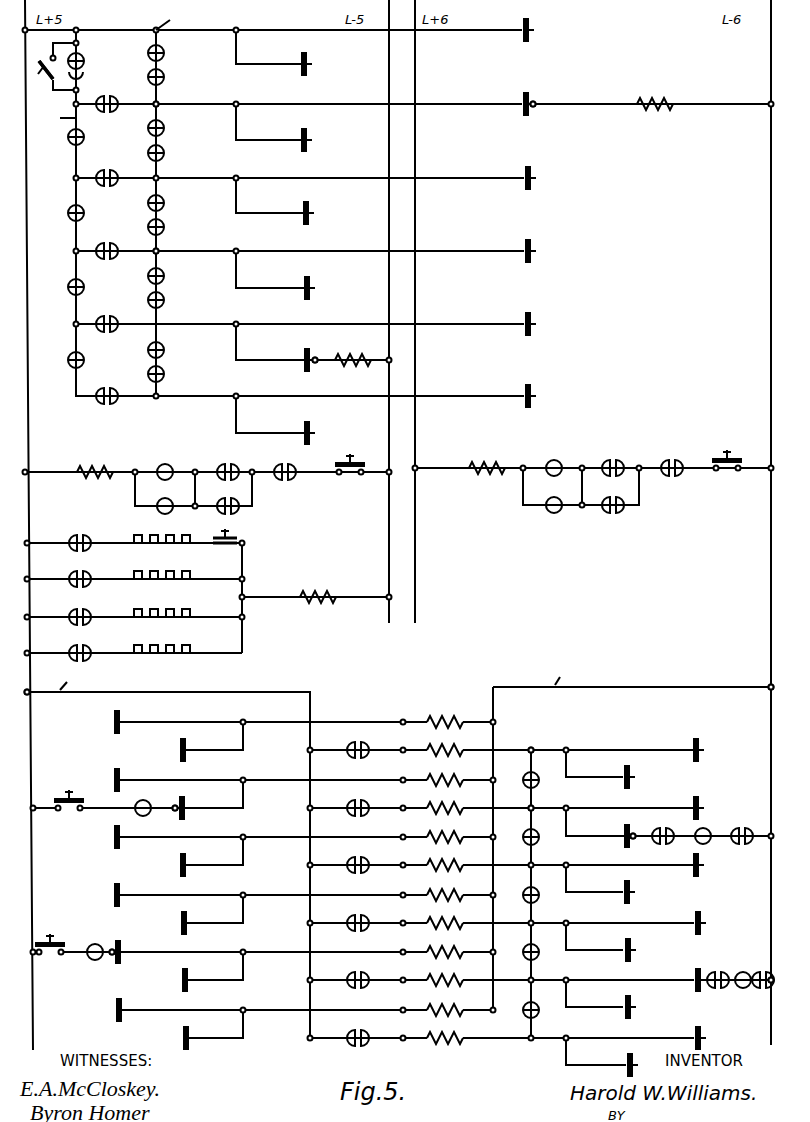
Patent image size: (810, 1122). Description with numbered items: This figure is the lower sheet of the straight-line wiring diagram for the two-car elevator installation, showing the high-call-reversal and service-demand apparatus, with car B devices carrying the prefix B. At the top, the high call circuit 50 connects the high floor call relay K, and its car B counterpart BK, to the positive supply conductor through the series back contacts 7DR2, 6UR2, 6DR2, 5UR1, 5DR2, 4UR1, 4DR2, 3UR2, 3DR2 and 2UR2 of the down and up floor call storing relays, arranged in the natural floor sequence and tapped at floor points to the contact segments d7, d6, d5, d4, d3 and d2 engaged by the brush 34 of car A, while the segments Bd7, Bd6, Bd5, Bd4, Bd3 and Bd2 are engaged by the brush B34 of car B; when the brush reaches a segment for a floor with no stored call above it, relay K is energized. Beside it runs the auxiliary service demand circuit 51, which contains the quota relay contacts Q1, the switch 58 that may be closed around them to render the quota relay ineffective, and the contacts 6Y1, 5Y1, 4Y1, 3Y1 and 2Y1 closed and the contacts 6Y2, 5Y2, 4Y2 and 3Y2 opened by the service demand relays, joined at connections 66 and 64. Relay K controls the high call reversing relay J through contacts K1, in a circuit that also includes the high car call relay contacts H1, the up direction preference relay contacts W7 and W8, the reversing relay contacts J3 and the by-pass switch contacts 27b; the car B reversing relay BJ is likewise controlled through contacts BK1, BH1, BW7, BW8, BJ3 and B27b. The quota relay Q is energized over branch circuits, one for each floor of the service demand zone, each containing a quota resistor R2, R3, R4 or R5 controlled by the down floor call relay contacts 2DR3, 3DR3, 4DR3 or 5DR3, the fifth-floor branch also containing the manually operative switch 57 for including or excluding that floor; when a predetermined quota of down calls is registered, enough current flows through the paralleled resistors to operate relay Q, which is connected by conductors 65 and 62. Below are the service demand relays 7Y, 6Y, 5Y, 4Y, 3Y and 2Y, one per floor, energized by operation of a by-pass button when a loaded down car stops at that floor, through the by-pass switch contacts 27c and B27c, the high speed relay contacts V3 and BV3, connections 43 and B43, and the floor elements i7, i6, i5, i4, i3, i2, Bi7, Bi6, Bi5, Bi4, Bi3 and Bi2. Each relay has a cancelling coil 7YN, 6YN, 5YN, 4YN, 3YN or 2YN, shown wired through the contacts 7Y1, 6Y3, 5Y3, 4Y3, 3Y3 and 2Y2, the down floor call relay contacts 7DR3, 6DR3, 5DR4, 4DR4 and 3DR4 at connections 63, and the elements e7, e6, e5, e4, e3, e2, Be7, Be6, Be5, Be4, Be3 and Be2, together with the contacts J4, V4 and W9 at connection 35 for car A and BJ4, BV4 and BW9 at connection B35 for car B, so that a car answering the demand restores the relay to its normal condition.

The relay bank supply wire 50 is at (169, 19).
The relay coil Q1 is at (89, 64).
The knife switch 58 is at (43, 86).
The junction 51 is at (54, 120).
The relay contact 6Y1 is at (107, 92).
The junction 66 is at (144, 116).
The relay coil 6Y2 is at (92, 137).
The relay contact 5Y1 is at (107, 167).
The relay coil 5Y2 is at (92, 213).
The relay contact 4Y1 is at (105, 241).
The junction 64 is at (146, 243).
The relay coil 4Y2 is at (92, 287).
The relay contact 3Y1 is at (107, 315).
The relay coil 3Y2 is at (92, 360).
The relay contact 2Y1 is at (107, 388).
The relay coil 7DR2 is at (177, 53).
The relay coil 6UR2 is at (176, 77).
The relay coil 6DR2 is at (177, 128).
The relay coil 5UR1 is at (176, 153).
The relay coil 5DR2 is at (177, 203).
The relay coil 4UR1 is at (176, 227).
The relay coil 4DR2 is at (177, 276).
The relay coil 3UR2 is at (176, 300).
The relay coil 3DR2 is at (177, 350).
The relay coil 2UR2 is at (176, 374).
The contact d7 is at (317, 64).
The contact d6 is at (317, 140).
The contact d5 is at (319, 213).
The contact d4 is at (321, 288).
The contact d3 is at (315, 351).
The junction 34 is at (324, 375).
The resistor K is at (353, 350).
The contact d2 is at (320, 429).
The contact Bd7 is at (544, 30).
The contact Bd6 is at (544, 97).
The junction B34 is at (548, 119).
The resistor BK is at (655, 95).
The contact Bd5 is at (545, 178).
The contact Bd4 is at (545, 251).
The contact Bd3 is at (545, 324).
The contact Bd2 is at (545, 396).
The resistor J is at (95, 463).
The relay coil H1 is at (166, 462).
The relay contact K1 is at (228, 462).
The relay contact W7 is at (281, 462).
The push button 27b is at (352, 455).
The relay coil W8 is at (158, 499).
The relay contact J3 is at (227, 499).
The relay contact 5DR3 is at (83, 536).
The resistor R5 is at (162, 530).
The switch 57 is at (238, 532).
The relay contact 4DR3 is at (83, 572).
The resistor R4 is at (163, 567).
The relay contact 3DR3 is at (87, 609).
The resistor R3 is at (163, 604).
The relay contact 2DR3 is at (83, 645).
The resistor R2 is at (163, 640).
The resistor Q is at (318, 588).
The conductor 65 is at (49, 682).
The resistor BJ is at (486, 458).
The relay coil BH1 is at (547, 459).
The relay contact BK1 is at (609, 459).
The relay contact BW7 is at (667, 459).
The push button B27b is at (727, 452).
The relay coil BW8 is at (547, 515).
The relay contact BJ3 is at (614, 515).
The conductor 62 is at (652, 678).
The contact i7 is at (107, 722).
The contact Bi7 is at (169, 750).
The relay contact 7Y1 is at (348, 744).
The resistor 7Y is at (445, 715).
The resistor 7YN is at (441, 743).
The contact e7 is at (708, 750).
The contact Be7 is at (644, 777).
The junction 63 is at (541, 788).
The relay coil 7DR3 is at (551, 785).
The contact i6 is at (106, 777).
The push button B27c is at (62, 796).
The relay coil BV3 is at (138, 799).
The contact Bi6 is at (195, 801).
The junction B43 is at (172, 820).
The relay contact 6Y3 is at (347, 802).
The resistor 6Y is at (445, 773).
The resistor 6YN is at (441, 801).
The contact e6 is at (708, 806).
The contact B35 is at (617, 830).
The junction Be6 is at (640, 847).
The relay contact BJ4 is at (661, 829).
The relay coil BV4 is at (716, 827).
The relay contact BW9 is at (732, 843).
The relay coil 6DR3 is at (551, 842).
The contact i5 is at (106, 837).
The contact Bi5 is at (168, 865).
The relay contact 5Y3 is at (347, 859).
The resistor 5Y is at (445, 830).
The resistor 5YN is at (441, 858).
The contact e5 is at (708, 867).
The contact Be5 is at (643, 892).
The relay coil 5DR4 is at (551, 900).
The contact i4 is at (106, 895).
The contact Bi4 is at (169, 923).
The relay contact 4Y3 is at (347, 917).
The resistor 4Y is at (445, 888).
The resistor 4YN is at (441, 916).
The contact e4 is at (710, 923).
The contact Be4 is at (644, 950).
The relay coil 4DR4 is at (551, 957).
The push button 27c is at (52, 941).
The relay coil V3 is at (93, 944).
The junction 43 is at (99, 966).
The contact i3 is at (129, 948).
The contact Bi3 is at (169, 980).
The relay contact 3Y3 is at (347, 974).
The resistor 3Y is at (445, 945).
The resistor 3YN is at (441, 973).
The contact e3 is at (682, 977).
The relay contact J4 is at (712, 971).
The relay coil V4 is at (739, 971).
The relay contact W9 is at (759, 988).
The junction 35 is at (740, 992).
The contact Be3 is at (644, 1007).
The relay coil 3DR4 is at (551, 1015).
The contact i2 is at (107, 1010).
The contact Bi2 is at (170, 1038).
The relay contact 2Y2 is at (347, 1032).
The resistor 2Y is at (445, 1003).
The resistor 2YN is at (441, 1031).
The contact e2 is at (710, 1036).
The contact Be2 is at (618, 1058).